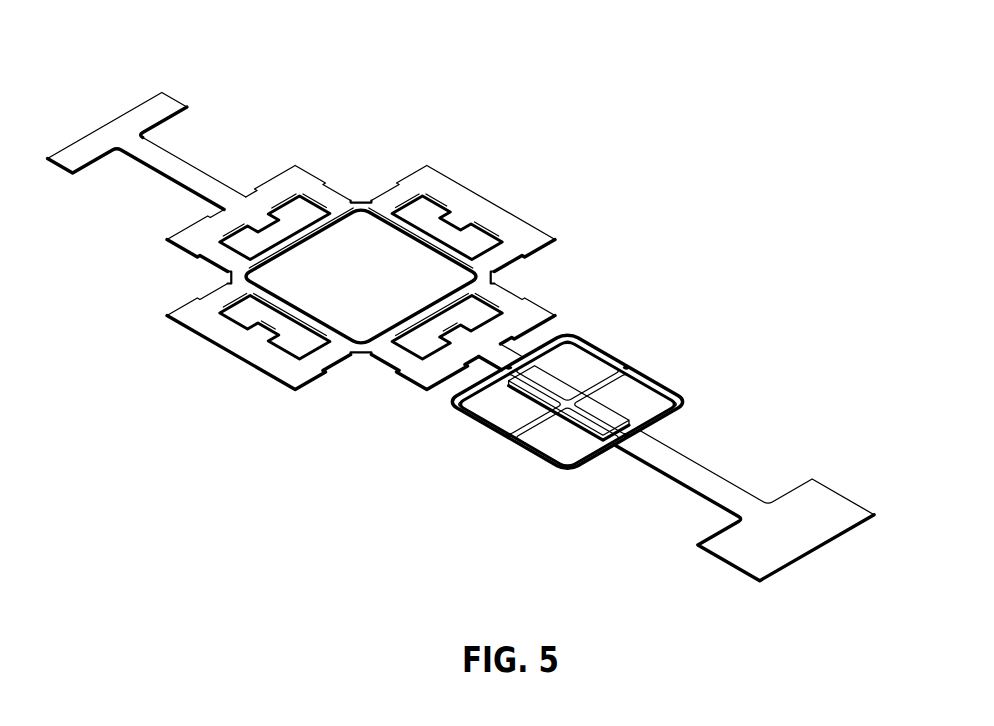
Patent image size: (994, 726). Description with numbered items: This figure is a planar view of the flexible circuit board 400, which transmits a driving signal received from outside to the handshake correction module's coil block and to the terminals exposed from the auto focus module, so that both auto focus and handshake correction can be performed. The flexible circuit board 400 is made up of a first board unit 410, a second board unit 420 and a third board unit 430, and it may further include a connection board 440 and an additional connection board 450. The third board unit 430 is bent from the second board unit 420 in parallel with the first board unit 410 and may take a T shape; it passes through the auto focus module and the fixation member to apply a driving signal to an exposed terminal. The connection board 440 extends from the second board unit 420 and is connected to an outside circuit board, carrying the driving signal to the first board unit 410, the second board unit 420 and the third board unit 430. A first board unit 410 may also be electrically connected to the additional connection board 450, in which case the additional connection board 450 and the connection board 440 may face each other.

The flexible circuit board 400 is at (540, 188).
The first board unit 410 is at (458, 195).
The second board unit 420 is at (656, 375).
The third board unit 430 is at (543, 433).
The connection board 440 is at (821, 481).
The additional connection board 450 is at (183, 92).